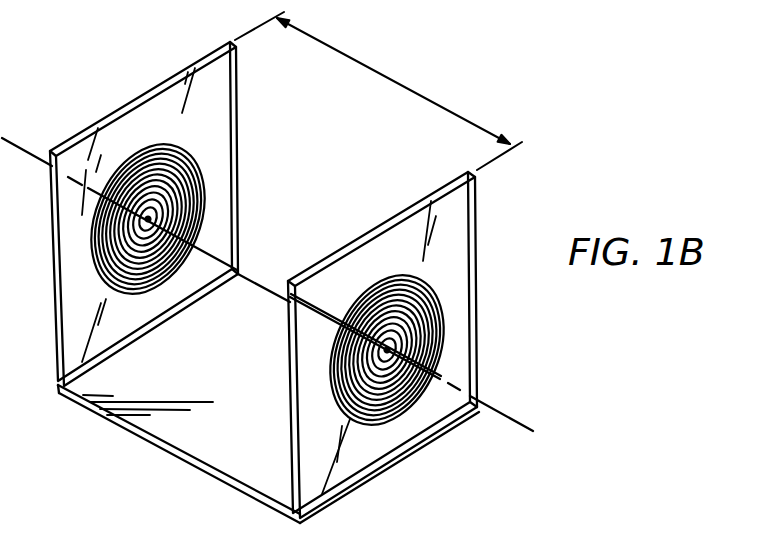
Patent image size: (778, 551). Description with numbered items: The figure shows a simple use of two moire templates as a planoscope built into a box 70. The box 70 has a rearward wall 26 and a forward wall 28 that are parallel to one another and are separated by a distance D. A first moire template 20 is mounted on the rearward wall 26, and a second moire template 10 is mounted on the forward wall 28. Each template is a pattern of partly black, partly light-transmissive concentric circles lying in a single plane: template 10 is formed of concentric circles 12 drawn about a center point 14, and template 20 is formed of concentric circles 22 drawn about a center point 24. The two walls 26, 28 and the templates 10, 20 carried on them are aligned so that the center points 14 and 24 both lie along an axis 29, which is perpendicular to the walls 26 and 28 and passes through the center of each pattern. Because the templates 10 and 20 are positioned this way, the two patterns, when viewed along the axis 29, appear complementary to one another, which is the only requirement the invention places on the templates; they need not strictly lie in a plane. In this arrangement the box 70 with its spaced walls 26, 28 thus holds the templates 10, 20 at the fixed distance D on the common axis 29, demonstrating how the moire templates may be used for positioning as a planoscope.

The moire template 10 is at (396, 278).
The concentric circles 12 is at (412, 398).
The center point 14 is at (432, 294).
The moire template 20 is at (155, 148).
The concentric circles 22 is at (171, 268).
The center point 24 is at (184, 175).
The rearward wall 26 is at (233, 97).
The forward wall 28 is at (463, 230).
The axis 29 is at (510, 413).
The box 70 is at (177, 452).
The distance D is at (397, 82).